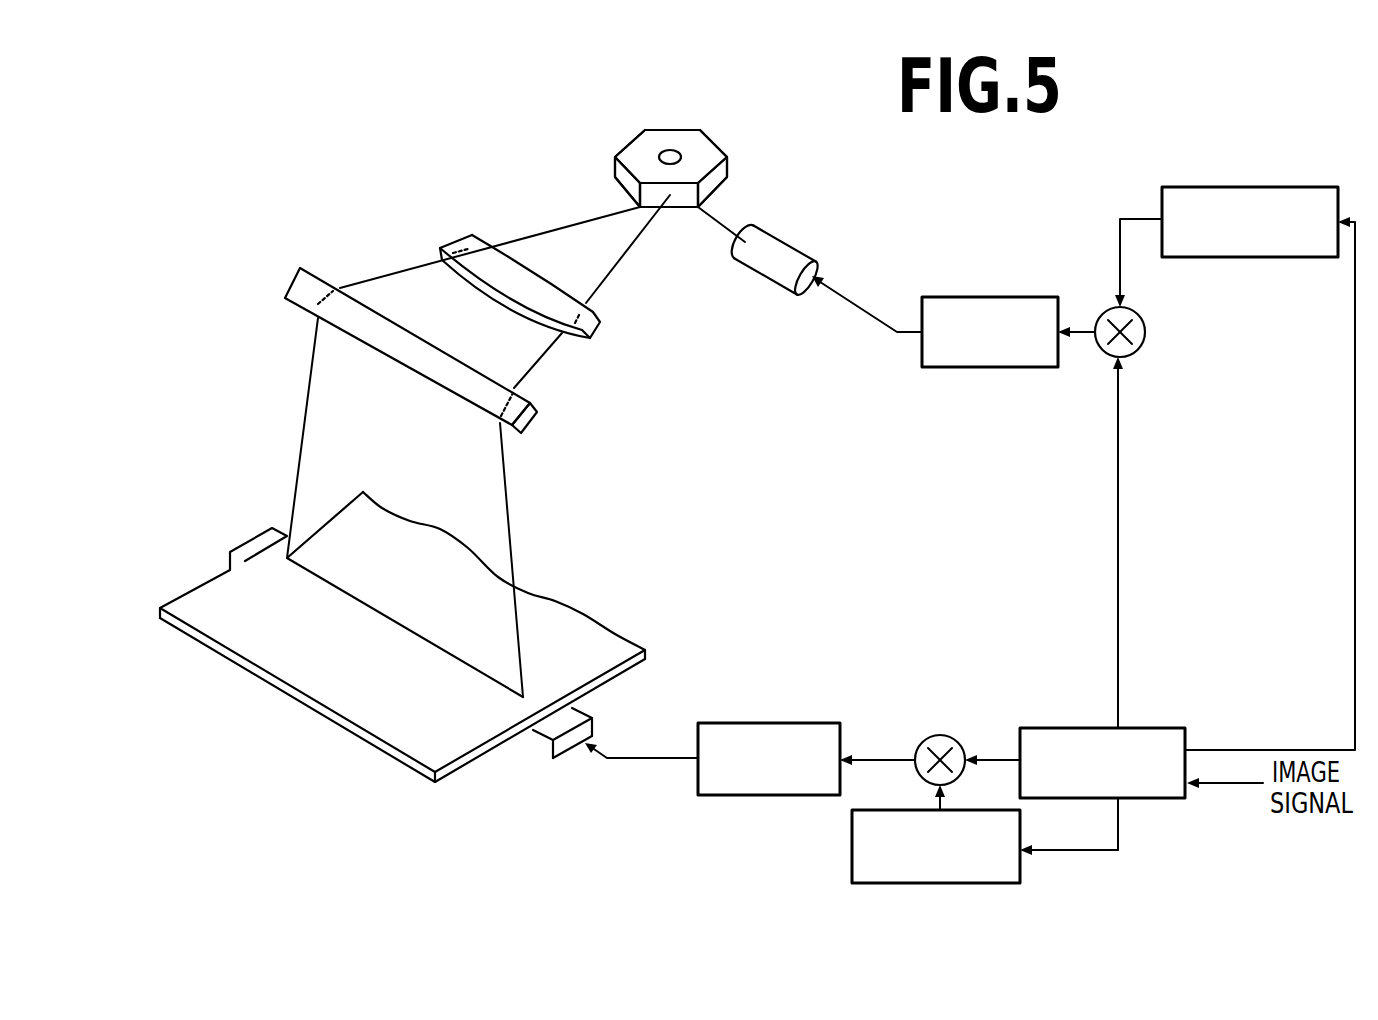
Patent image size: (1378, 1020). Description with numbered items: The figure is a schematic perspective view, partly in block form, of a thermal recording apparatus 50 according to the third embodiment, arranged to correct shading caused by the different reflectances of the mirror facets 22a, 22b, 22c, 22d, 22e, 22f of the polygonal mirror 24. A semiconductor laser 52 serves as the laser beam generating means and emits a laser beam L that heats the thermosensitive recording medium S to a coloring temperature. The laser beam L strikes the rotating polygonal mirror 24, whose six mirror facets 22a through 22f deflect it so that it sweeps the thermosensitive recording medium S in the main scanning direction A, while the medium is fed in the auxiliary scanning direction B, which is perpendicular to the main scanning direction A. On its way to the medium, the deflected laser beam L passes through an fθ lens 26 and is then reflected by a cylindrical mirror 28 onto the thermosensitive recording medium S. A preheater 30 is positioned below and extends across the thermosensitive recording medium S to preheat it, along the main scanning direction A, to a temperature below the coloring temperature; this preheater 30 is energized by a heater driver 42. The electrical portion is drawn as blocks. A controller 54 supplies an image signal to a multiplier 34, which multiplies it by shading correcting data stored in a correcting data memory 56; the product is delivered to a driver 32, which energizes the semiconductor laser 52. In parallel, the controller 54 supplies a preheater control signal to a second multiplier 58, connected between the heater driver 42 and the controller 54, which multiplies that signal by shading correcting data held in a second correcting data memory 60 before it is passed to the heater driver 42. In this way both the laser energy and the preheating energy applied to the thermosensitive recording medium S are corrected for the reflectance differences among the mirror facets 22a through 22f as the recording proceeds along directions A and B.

The thermal recording apparatus 50 is at (420, 166).
The polygonal mirror 24 is at (711, 125).
The mirror facet 22a is at (672, 205).
The mirror facet 22b is at (720, 185).
The mirror facet 22c is at (713, 140).
The mirror facet 22d is at (658, 128).
The mirror facet 22e is at (628, 142).
The mirror facet 22f is at (622, 182).
The fθ lens 26 is at (602, 320).
The cylindrical mirror 28 is at (537, 413).
The preheater 30 is at (600, 730).
The driver 32 is at (990, 297).
The multiplier 34 is at (1145, 335).
The heater driver 42 is at (768, 723).
The semiconductor laser 52 is at (777, 245).
The controller 54 is at (1155, 798).
The correcting data memory 56 is at (1243, 187).
The multiplier 58 is at (952, 735).
The correcting data memory 60 is at (852, 850).
The laser beam L is at (510, 503).
The thermosensitive recording medium S is at (320, 683).
The main scanning direction A is at (347, 612).
The auxiliary scanning direction B is at (257, 512).